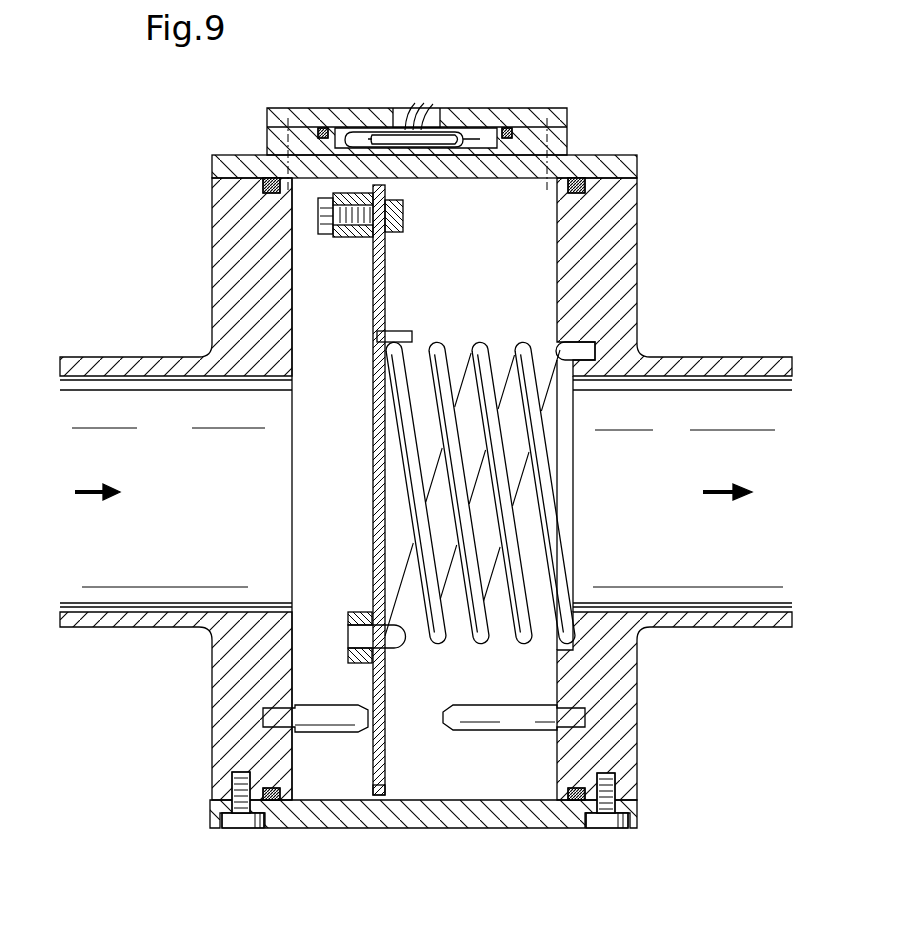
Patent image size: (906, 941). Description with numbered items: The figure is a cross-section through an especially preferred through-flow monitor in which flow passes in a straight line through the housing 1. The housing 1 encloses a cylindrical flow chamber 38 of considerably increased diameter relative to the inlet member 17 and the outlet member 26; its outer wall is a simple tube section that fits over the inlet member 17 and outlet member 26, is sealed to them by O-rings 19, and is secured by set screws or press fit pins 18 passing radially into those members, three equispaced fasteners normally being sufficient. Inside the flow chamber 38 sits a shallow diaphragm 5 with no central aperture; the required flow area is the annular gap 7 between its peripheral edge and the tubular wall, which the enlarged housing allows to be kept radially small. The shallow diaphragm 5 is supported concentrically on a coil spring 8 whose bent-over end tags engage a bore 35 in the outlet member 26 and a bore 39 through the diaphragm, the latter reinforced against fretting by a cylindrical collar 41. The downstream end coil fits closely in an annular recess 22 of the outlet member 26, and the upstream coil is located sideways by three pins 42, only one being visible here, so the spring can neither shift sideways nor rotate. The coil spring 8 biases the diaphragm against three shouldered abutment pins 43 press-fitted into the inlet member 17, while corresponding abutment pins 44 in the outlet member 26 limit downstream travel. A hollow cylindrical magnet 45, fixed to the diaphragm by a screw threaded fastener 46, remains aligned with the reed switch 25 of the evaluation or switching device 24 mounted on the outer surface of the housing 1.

The housing 1 is at (600, 155).
The shallow diaphragm 5 is at (372, 470).
The annular gap 7 is at (380, 795).
The coil spring 8 is at (478, 342).
The inlet member 17 is at (214, 750).
The set screws or press fit pins 18 is at (243, 820).
The O-rings 19 is at (262, 186).
The annular recess 22 is at (565, 655).
The evaluation or switching device 24 is at (360, 112).
The reed switch 25 is at (430, 128).
The outlet member 26 is at (630, 288).
The bore 35 is at (590, 342).
The flow chamber 38 is at (537, 242).
The bore 39 is at (387, 663).
The cylindrical collar 41 is at (358, 612).
The pins 42 is at (392, 330).
The abutment pins 43 is at (263, 713).
The abutment pins 44 is at (585, 718).
The hollow cylindrical magnet 45 is at (356, 238).
The screw threaded fastener 46 is at (332, 227).